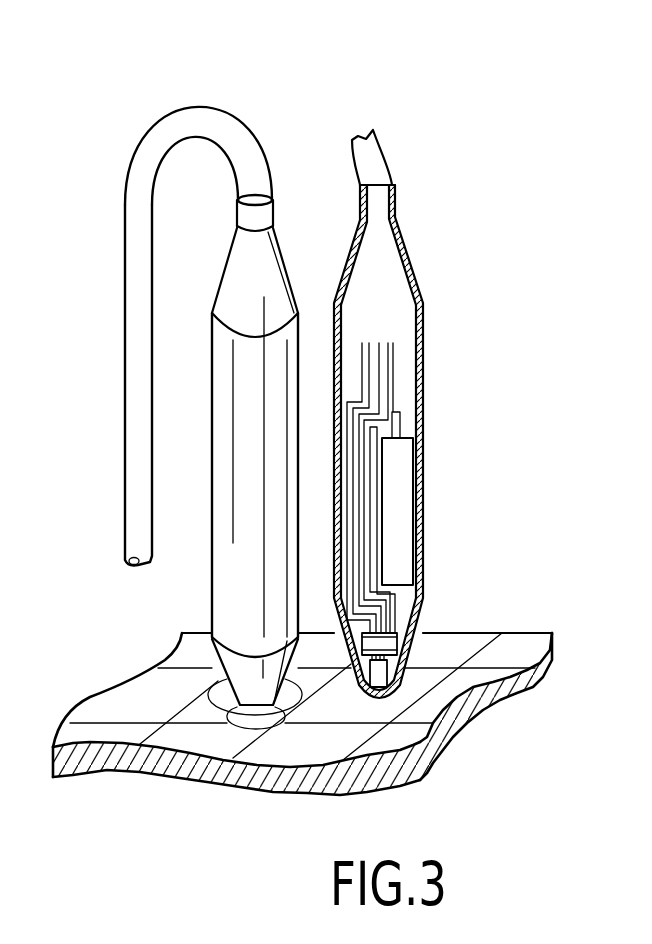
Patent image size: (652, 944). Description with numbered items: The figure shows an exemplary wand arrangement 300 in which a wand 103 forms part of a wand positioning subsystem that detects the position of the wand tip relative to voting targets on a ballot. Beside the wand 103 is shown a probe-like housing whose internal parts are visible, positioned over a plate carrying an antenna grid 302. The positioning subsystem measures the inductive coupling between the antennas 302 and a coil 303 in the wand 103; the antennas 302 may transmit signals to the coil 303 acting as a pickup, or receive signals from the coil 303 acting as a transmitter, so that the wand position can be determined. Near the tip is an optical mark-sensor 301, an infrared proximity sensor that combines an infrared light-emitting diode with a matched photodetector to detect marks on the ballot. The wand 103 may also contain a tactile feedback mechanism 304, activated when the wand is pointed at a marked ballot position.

The measurement arrangement 300 is at (347, 406).
The wand 103 is at (282, 247).
The optical mark-sensor 301 is at (380, 680).
The antenna grid 302 is at (426, 735).
The coil 303 is at (387, 643).
The tactile feedback mechanism 304 is at (398, 502).